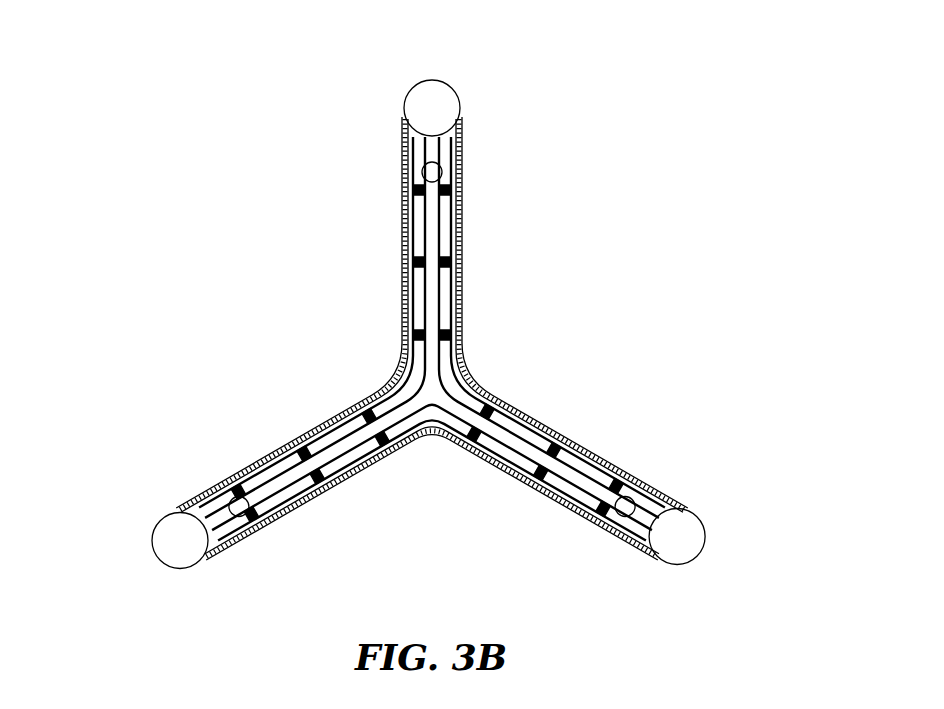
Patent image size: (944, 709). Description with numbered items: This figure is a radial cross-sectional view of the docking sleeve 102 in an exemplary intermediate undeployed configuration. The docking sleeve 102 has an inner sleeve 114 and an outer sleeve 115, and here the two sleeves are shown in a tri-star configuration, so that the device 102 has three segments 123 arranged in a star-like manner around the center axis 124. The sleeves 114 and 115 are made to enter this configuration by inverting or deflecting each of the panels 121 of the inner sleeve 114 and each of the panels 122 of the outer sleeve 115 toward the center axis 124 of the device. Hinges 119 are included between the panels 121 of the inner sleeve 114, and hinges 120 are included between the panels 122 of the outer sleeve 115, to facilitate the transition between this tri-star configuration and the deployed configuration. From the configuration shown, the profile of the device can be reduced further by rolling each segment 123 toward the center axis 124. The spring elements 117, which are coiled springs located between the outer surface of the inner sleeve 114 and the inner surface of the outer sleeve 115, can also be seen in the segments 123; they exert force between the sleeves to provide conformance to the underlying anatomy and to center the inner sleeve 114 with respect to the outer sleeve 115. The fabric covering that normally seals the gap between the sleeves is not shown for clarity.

The docking sleeve 102 is at (616, 267).
The inner sleeve 114 is at (458, 290).
The outer sleeve 115 is at (461, 228).
The spring elements 117 is at (323, 485).
The hinges 119 is at (434, 172).
The hinges 120 is at (437, 105).
The panels 121 is at (345, 430).
The panels 122 is at (402, 220).
The segments 123 is at (383, 100).
The center axis 124 is at (429, 394).